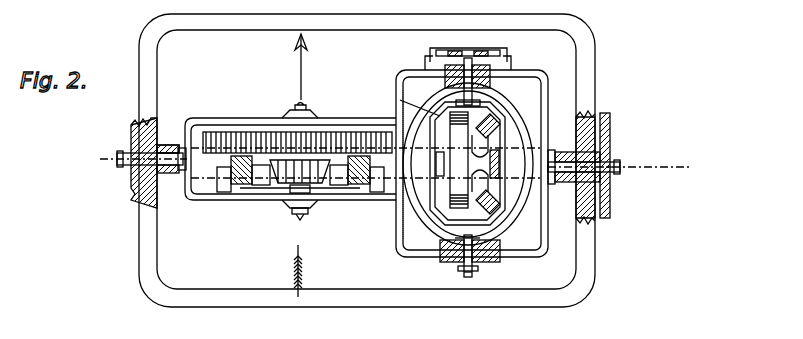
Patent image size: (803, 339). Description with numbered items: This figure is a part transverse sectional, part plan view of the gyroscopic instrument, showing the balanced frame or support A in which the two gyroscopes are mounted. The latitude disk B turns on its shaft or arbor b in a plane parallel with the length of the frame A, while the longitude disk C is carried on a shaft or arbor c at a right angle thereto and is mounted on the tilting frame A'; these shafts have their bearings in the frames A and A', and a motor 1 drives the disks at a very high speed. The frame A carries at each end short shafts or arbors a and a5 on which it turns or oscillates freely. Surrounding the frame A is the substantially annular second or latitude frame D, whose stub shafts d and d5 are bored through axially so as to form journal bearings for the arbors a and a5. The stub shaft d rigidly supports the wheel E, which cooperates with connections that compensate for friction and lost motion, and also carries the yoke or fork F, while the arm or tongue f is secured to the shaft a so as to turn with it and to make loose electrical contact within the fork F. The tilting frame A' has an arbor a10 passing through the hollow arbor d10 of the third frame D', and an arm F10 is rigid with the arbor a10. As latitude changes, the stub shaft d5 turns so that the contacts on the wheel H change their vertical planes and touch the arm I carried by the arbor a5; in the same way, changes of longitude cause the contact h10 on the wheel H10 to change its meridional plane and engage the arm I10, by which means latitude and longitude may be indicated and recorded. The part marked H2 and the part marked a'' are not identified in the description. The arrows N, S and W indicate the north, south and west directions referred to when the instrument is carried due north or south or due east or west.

The balanced frame A is at (374, 163).
The tilting frame A' is at (448, 167).
The latitude gyroscope disk B is at (326, 132).
The longitude gyroscope disk C is at (440, 112).
The latitude frame D is at (186, 171).
The third frame D' is at (456, 148).
The wheel E is at (605, 113).
The yoke or fork F is at (613, 150).
The arm F10 is at (478, 266).
The wheel H is at (428, 58).
The cap plate H2 is at (480, 48).
The wheel H10 is at (503, 62).
The contact h10 is at (450, 52).
The arm I is at (117, 157).
The arm I10 is at (468, 50).
The arbor a is at (639, 155).
The upper pivot collar a'' is at (529, 47).
The arbor a5 is at (131, 170).
The arbor a10 is at (460, 238).
The shaft or arbor b is at (300, 164).
The shaft or arbor c is at (552, 118).
The stub shaft d is at (570, 184).
The stub shaft d5 is at (165, 174).
The hollow arbor d10 is at (446, 258).
The arm or tongue f is at (465, 274).
The motor 1 is at (285, 176).
The north direction arrow N is at (299, 50).
The south direction arrow S is at (296, 289).
The west direction W is at (98, 160).